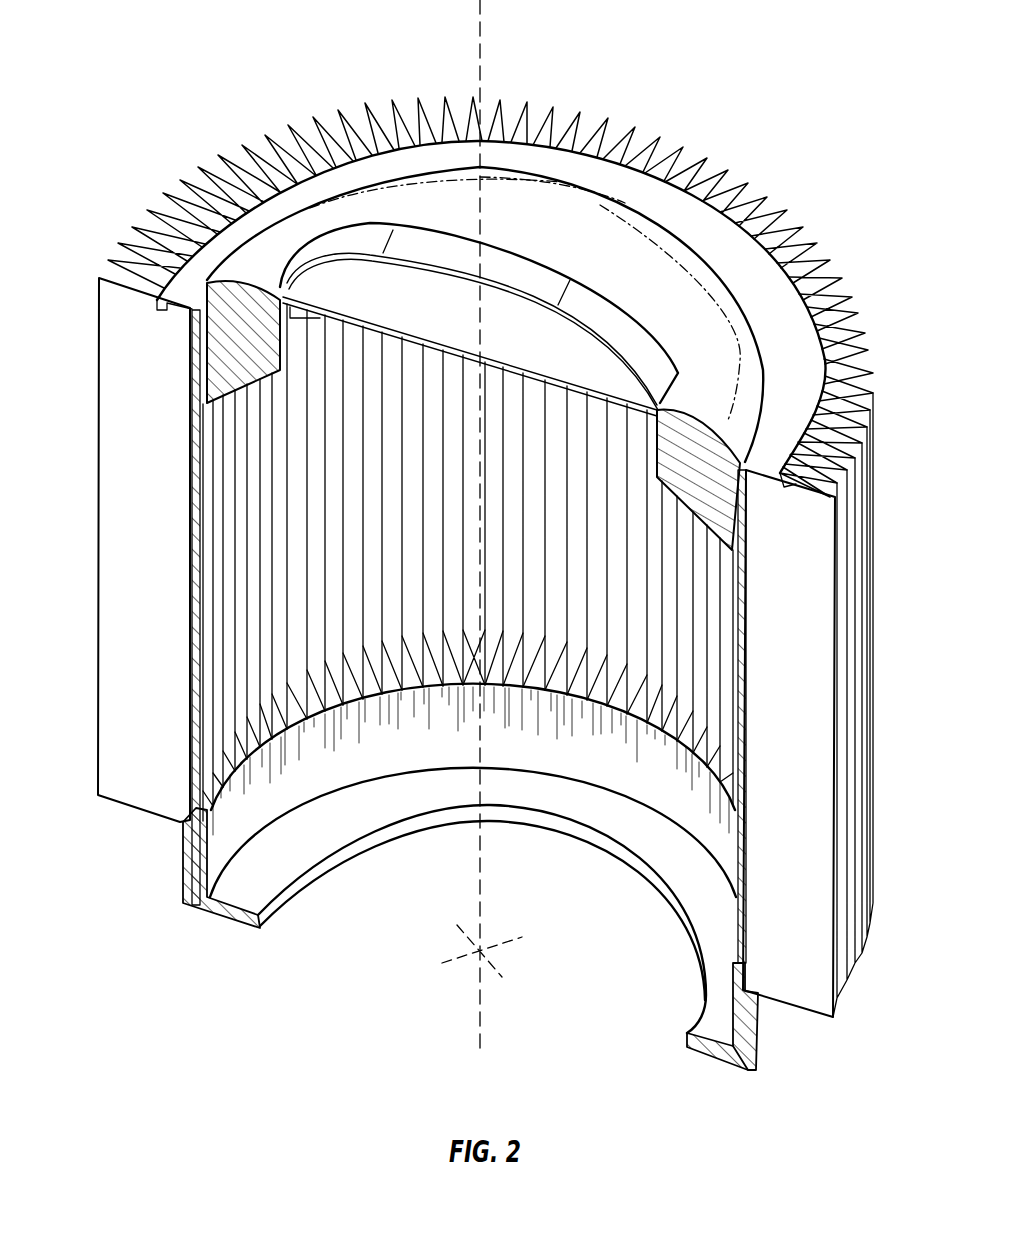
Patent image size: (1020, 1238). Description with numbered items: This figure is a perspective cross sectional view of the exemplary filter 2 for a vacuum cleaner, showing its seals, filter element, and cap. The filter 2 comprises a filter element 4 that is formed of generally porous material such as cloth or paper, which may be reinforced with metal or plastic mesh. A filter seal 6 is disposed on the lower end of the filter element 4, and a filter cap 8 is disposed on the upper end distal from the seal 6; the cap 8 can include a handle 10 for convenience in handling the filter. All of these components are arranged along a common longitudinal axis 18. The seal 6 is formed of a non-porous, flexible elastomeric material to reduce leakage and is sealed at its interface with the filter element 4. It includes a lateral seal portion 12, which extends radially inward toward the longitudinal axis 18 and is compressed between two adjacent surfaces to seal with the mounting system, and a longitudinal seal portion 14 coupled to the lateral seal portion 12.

The filter 2 is at (124, 81).
The filter element 4 is at (118, 553).
The filter seal 6 is at (168, 856).
The filter cap 8 is at (640, 258).
The handle 10 is at (422, 240).
The lateral seal portion 12 is at (686, 1042).
The longitudinal seal portion 14 is at (748, 1012).
The longitudinal axis 18 is at (482, 60).